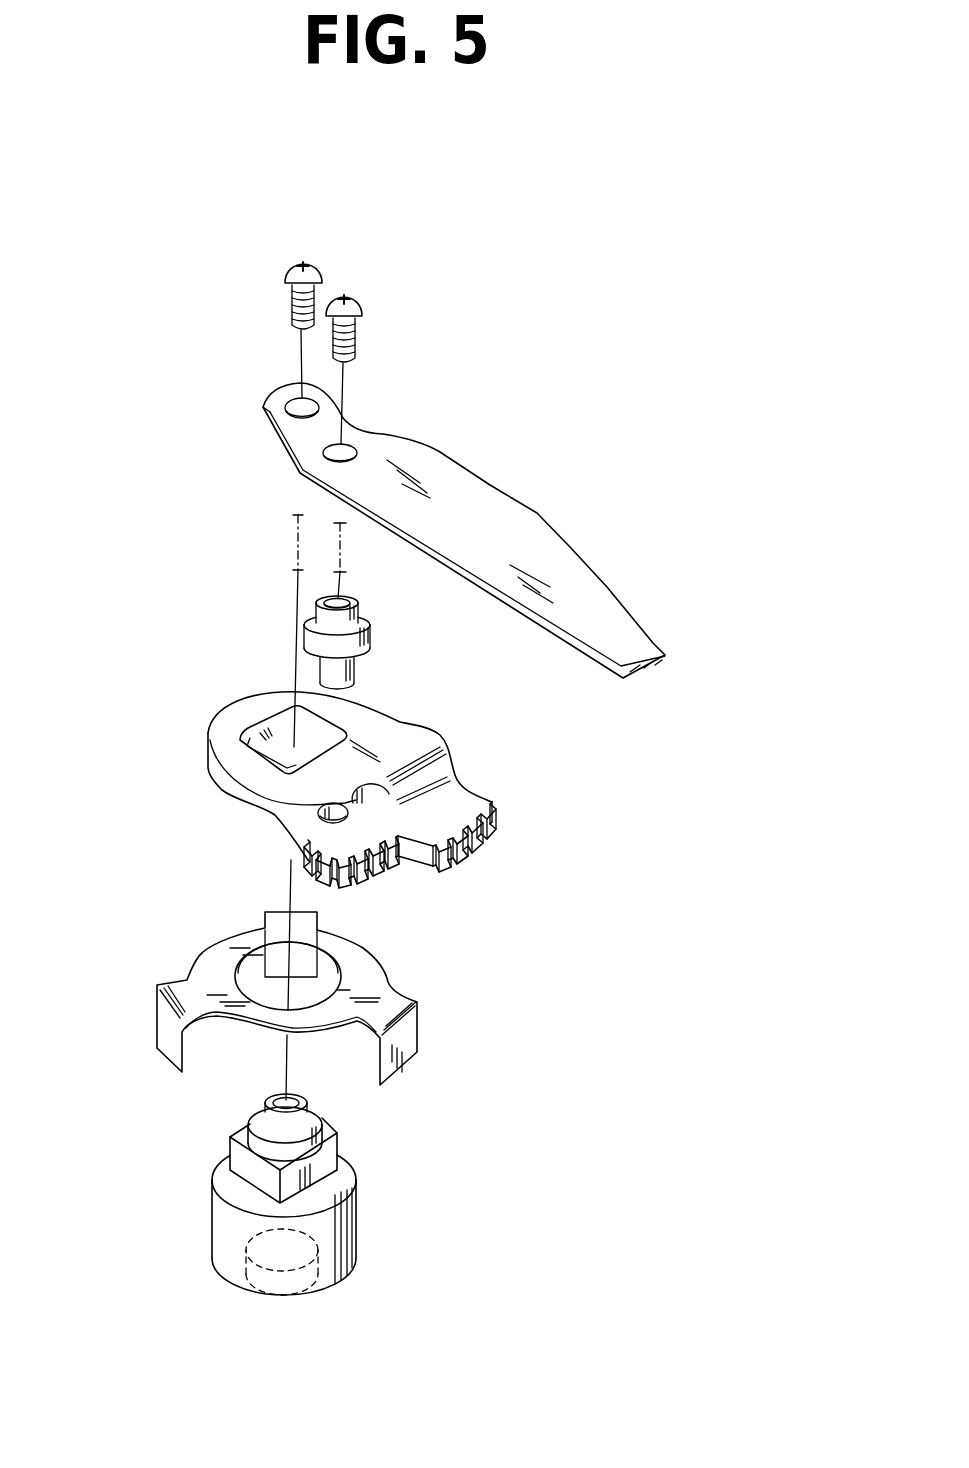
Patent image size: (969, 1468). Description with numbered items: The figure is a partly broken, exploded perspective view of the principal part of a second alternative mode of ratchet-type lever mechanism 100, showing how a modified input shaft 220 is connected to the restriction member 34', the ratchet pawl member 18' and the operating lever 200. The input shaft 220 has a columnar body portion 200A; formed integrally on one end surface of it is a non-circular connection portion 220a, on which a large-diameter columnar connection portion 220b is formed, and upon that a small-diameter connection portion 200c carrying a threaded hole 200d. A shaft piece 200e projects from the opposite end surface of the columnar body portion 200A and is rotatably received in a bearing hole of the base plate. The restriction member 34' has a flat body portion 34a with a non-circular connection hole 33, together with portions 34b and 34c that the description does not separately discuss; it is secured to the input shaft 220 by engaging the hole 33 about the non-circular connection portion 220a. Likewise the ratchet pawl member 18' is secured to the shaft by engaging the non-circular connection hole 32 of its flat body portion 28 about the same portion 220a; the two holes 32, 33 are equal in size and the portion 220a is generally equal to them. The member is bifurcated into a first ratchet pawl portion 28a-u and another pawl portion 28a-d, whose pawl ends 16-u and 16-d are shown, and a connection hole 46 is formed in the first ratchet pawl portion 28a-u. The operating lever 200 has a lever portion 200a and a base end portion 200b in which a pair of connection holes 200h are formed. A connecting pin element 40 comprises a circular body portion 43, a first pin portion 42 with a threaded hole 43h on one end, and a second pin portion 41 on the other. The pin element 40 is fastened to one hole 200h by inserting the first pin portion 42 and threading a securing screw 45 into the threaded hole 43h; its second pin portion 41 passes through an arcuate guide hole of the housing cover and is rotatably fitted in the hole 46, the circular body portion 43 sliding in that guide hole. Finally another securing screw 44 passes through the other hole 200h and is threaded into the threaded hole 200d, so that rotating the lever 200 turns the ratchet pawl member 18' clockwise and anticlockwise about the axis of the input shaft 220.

The ratchet-type lever mechanism 100 is at (590, 432).
The securing screw 44 is at (322, 268).
The securing screw 45 is at (362, 308).
The operating lever 200 is at (442, 520).
The pawl arm 200a is at (523, 530).
The base end portion 200b is at (283, 441).
The connection holes 200h is at (312, 408).
The connecting pin element 40 is at (351, 620).
The second pin portion 41 is at (354, 673).
The first pin portion 42 is at (306, 612).
The circular body portion 43 is at (378, 586).
The threaded hole 43h is at (348, 601).
The flat body portion 28 is at (410, 792).
The non-circular connection hole 32 is at (215, 728).
The ratchet pawl member 18' is at (511, 748).
The lower step surface 28a-d is at (463, 790).
The first ratchet pawl portion 28a-u is at (288, 836).
The lower teeth 16-d is at (480, 846).
The upper teeth 16-u is at (375, 873).
The connection hole 46 is at (318, 812).
The restriction member 34' is at (301, 1002).
The non-circular connection hole 33 is at (235, 978).
The flat body portion 34a is at (378, 983).
The bracket legs 34b is at (212, 952).
The bracket leg end 34c is at (415, 1067).
The input shaft 220 is at (301, 1228).
The non-circular connection portion 220a is at (337, 1140).
The large-diameter columnar connection portion 220b is at (230, 1157).
The columnar body portion 200A is at (212, 1200).
The small-diameter connection portion 200c is at (250, 1115).
The threaded hole 200d is at (265, 1101).
The shaft piece 200e is at (307, 1280).